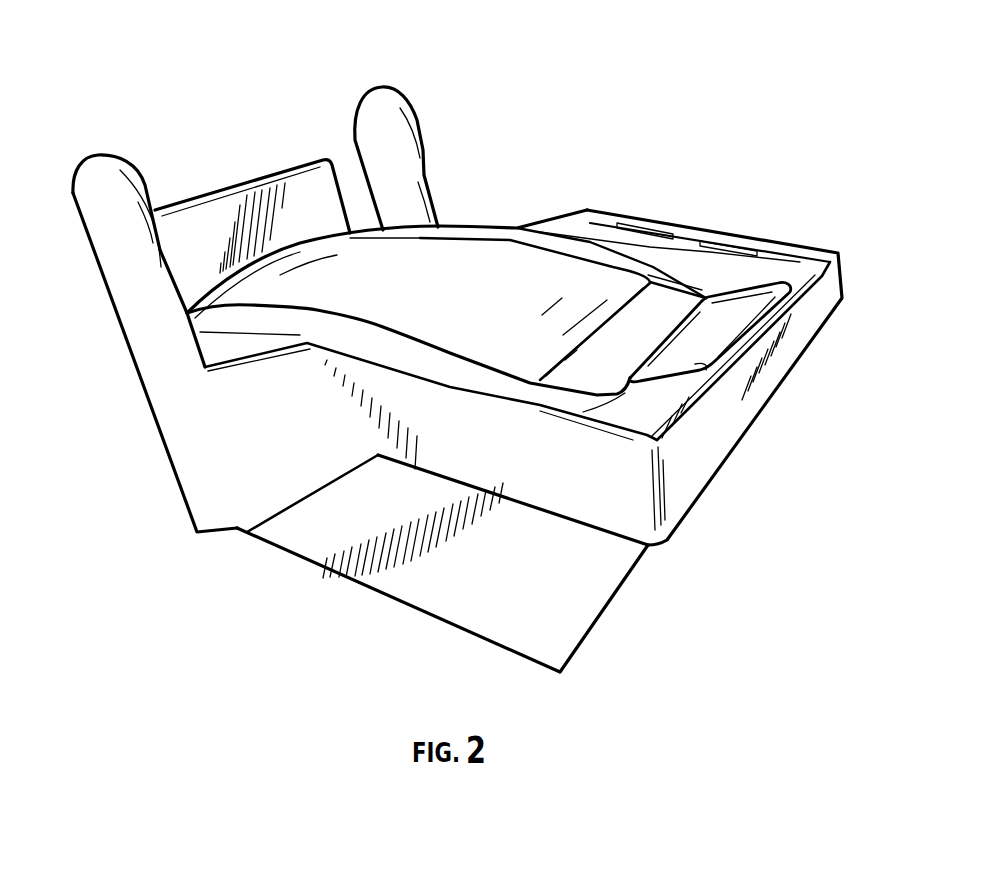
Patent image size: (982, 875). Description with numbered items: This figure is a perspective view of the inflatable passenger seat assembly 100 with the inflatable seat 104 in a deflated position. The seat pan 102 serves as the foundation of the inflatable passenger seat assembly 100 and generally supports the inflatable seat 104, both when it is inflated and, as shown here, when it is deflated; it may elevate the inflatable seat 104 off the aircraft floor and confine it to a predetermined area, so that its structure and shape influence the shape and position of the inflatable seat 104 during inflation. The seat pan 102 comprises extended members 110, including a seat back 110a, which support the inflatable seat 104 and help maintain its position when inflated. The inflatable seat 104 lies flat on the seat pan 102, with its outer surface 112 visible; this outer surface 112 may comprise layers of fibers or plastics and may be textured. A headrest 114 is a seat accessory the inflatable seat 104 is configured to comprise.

The inflatable passenger seat assembly 100 is at (683, 95).
The seat pan 102 is at (720, 472).
The inflatable seat 104 is at (633, 250).
The extended member 110 is at (390, 92).
The seat back 110a is at (274, 176).
The outer surface 112 is at (468, 263).
The headrest 114 is at (777, 305).